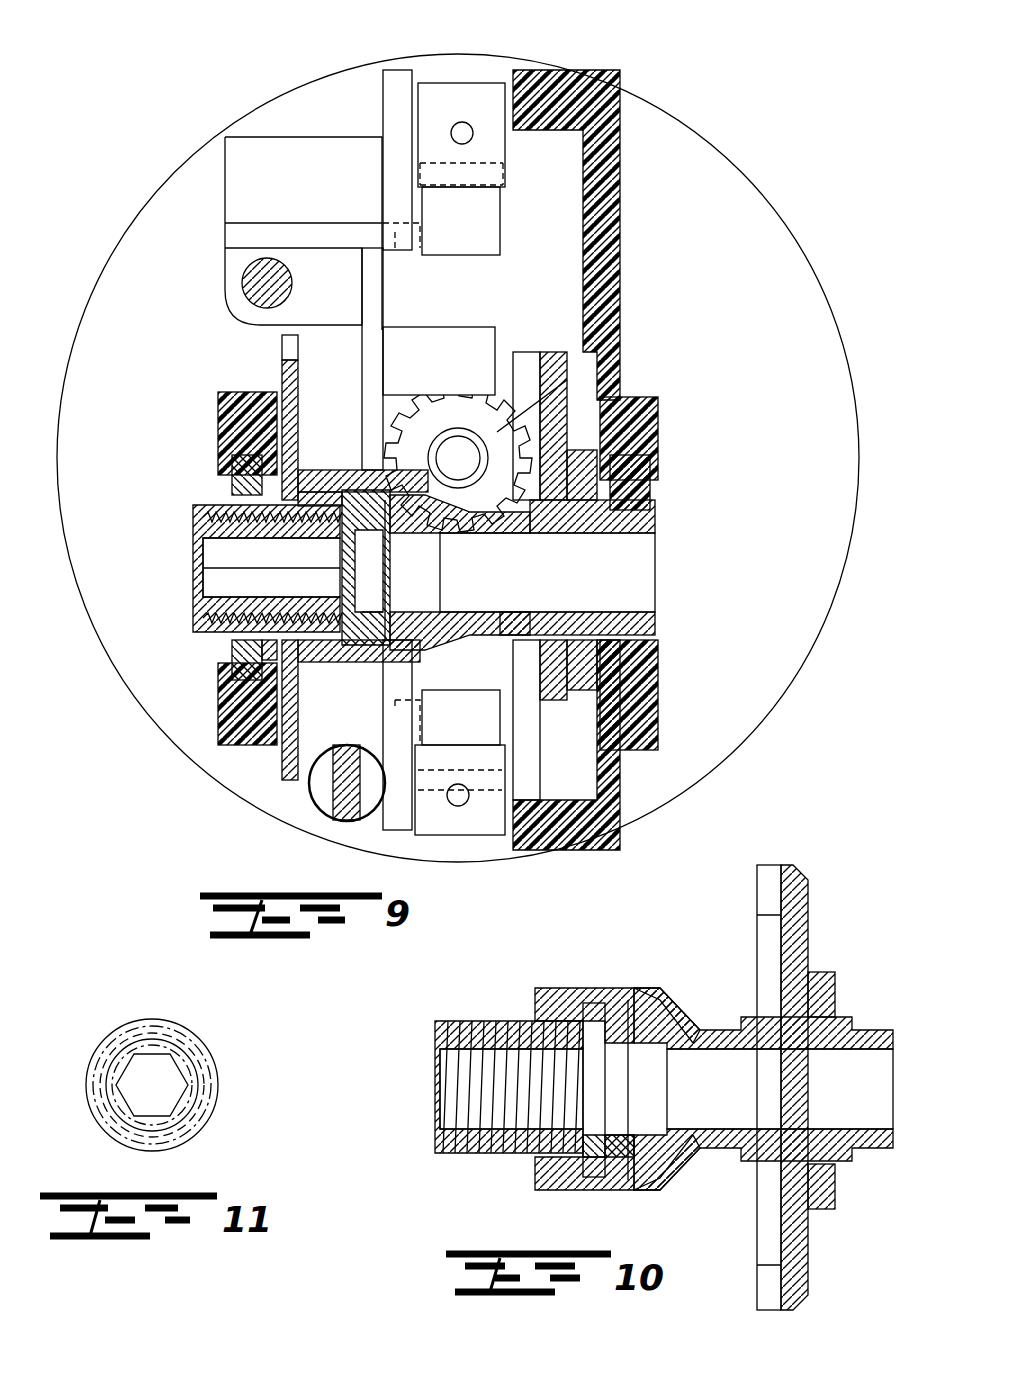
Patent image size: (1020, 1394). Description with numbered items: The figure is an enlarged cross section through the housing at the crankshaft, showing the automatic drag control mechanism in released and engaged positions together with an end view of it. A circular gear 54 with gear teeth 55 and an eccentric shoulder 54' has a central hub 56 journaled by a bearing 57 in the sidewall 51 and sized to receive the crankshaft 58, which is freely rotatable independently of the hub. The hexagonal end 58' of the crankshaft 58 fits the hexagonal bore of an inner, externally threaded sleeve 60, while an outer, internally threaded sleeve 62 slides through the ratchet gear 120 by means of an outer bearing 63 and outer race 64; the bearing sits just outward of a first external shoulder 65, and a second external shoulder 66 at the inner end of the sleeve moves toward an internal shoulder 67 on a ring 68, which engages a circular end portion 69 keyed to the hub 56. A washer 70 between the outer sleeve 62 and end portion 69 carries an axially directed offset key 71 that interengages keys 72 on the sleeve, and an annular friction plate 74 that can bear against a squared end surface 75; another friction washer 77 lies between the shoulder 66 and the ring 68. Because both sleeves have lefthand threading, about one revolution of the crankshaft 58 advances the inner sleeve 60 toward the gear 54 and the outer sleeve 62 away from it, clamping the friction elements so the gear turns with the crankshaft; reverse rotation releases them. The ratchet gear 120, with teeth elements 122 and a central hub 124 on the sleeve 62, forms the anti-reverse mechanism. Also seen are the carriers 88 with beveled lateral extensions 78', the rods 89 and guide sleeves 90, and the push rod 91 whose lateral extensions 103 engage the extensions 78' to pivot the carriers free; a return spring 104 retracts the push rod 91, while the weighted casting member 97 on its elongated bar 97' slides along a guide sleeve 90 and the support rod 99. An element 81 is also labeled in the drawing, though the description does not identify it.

In FIG. 9, the sidewall 51 is at (620, 781).
In FIG. 9, the circular gear 54 is at (596, 514).
In FIG. 10, the circular gear 54 is at (808, 1087).
In FIG. 9, the eccentric shoulder 54' is at (635, 582).
In FIG. 10, the eccentric shoulder 54' is at (847, 1086).
In FIG. 9, the gear teeth 55 is at (520, 352).
In FIG. 9, the central hub 56 is at (655, 622).
In FIG. 10, the central hub 56 is at (893, 1150).
In FIG. 9, the bearing 57 is at (658, 645).
In FIG. 9, the crankshaft 58 is at (572, 572).
In FIG. 10, the crankshaft 58 is at (785, 1063).
In FIG. 9, the hexagonal end 58' is at (181, 578).
In FIG. 11, the hexagonal end 58' is at (116, 1085).
In FIG. 9, the inner externally threaded sleeve 60 is at (215, 600).
In FIG. 11, the inner externally threaded sleeve 60 is at (185, 1062).
In FIG. 9, the outer internally threaded sleeve 62 is at (215, 630).
In FIG. 10, the outer internally threaded sleeve 62 is at (452, 1021).
In FIG. 11, the outer internally threaded sleeve 62 is at (205, 1097).
In FIG. 9, the outer bearing 63 is at (232, 660).
In FIG. 9, the outer race 64 is at (218, 708).
In FIG. 9, the first external shoulder 65 is at (232, 462).
In FIG. 9, the second external shoulder 66 is at (335, 480).
In FIG. 9, the internal shoulder 67 is at (318, 492).
In FIG. 10, the internal shoulder 67 is at (540, 1165).
In FIG. 9, the ring 68 is at (298, 670).
In FIG. 10, the ring 68 is at (590, 1190).
In FIG. 9, the circular end portion 69 is at (440, 637).
In FIG. 10, the circular end portion 69 is at (665, 1165).
In FIG. 9, the washer 70 is at (388, 600).
In FIG. 10, the washer 70 is at (622, 1178).
In FIG. 10, the axially directed offset key 71 is at (595, 1000).
In FIG. 9, the keys or offset elements 72 is at (385, 540).
In FIG. 9, the annular friction plate 74 is at (440, 525).
In FIG. 10, the annular friction plate 74 is at (648, 990).
In FIG. 9, the squared end surface 75 is at (375, 635).
In FIG. 9, the friction washer 77 is at (330, 662).
In FIG. 10, the friction washer 77 is at (565, 990).
In FIG. 9, the lateral extensions 78' is at (412, 539).
In FIG. 9, the pawl lever 81 is at (567, 385).
In FIG. 9, the carrier 88 is at (500, 218).
In FIG. 9, the axially directed rods 89 is at (470, 125).
In FIG. 9, the guide sleeves 90 is at (440, 90).
In FIG. 9, the push rod 91 is at (335, 805).
In FIG. 9, the weighted slide member 97 is at (303, 199).
In FIG. 9, the elongated bar 97' is at (382, 139).
In FIG. 9, the support rod 99 is at (243, 286).
In FIG. 9, the lateral extensions 103 is at (388, 226).
In FIG. 9, the return spring 104 is at (318, 800).
In FIG. 9, the ratchet gear 120 is at (282, 372).
In FIG. 9, the teeth elements 122 is at (282, 340).
In FIG. 9, the central hub 124 is at (250, 520).